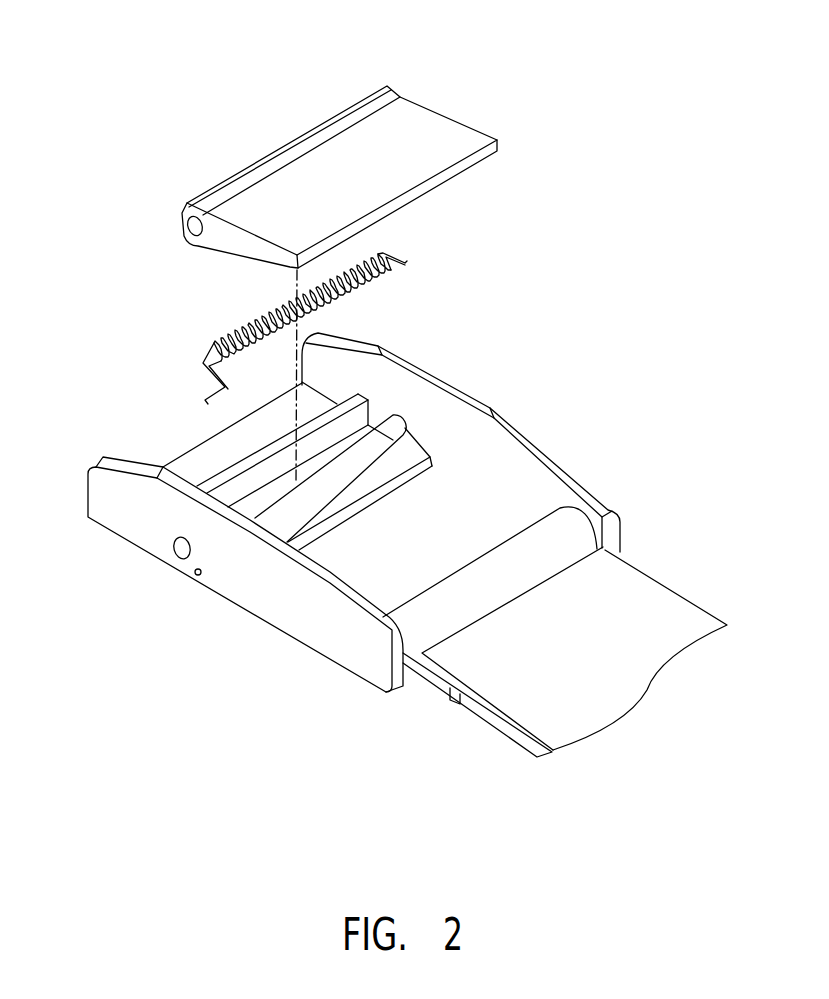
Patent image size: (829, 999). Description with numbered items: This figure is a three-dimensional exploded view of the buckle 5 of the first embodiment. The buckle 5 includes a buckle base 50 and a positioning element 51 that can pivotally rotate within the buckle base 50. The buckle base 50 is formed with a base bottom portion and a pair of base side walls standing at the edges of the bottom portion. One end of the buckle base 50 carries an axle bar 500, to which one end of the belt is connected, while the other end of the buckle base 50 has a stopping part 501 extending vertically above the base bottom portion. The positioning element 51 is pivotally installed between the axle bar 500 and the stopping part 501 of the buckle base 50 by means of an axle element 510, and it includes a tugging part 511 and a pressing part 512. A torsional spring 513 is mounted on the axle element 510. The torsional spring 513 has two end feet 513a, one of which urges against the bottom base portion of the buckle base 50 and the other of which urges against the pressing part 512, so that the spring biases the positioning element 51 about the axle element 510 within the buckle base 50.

The buckle 5 is at (760, 747).
The buckle base 50 is at (265, 593).
The axle bar 500 is at (577, 513).
The stopping part 501 is at (237, 487).
The axle element 510 is at (392, 425).
The positioning element 51 is at (436, 103).
The tugging part 511 is at (185, 207).
The pressing part 512 is at (453, 155).
The torsional spring 513 is at (360, 296).
The end feet 513a is at (402, 258).